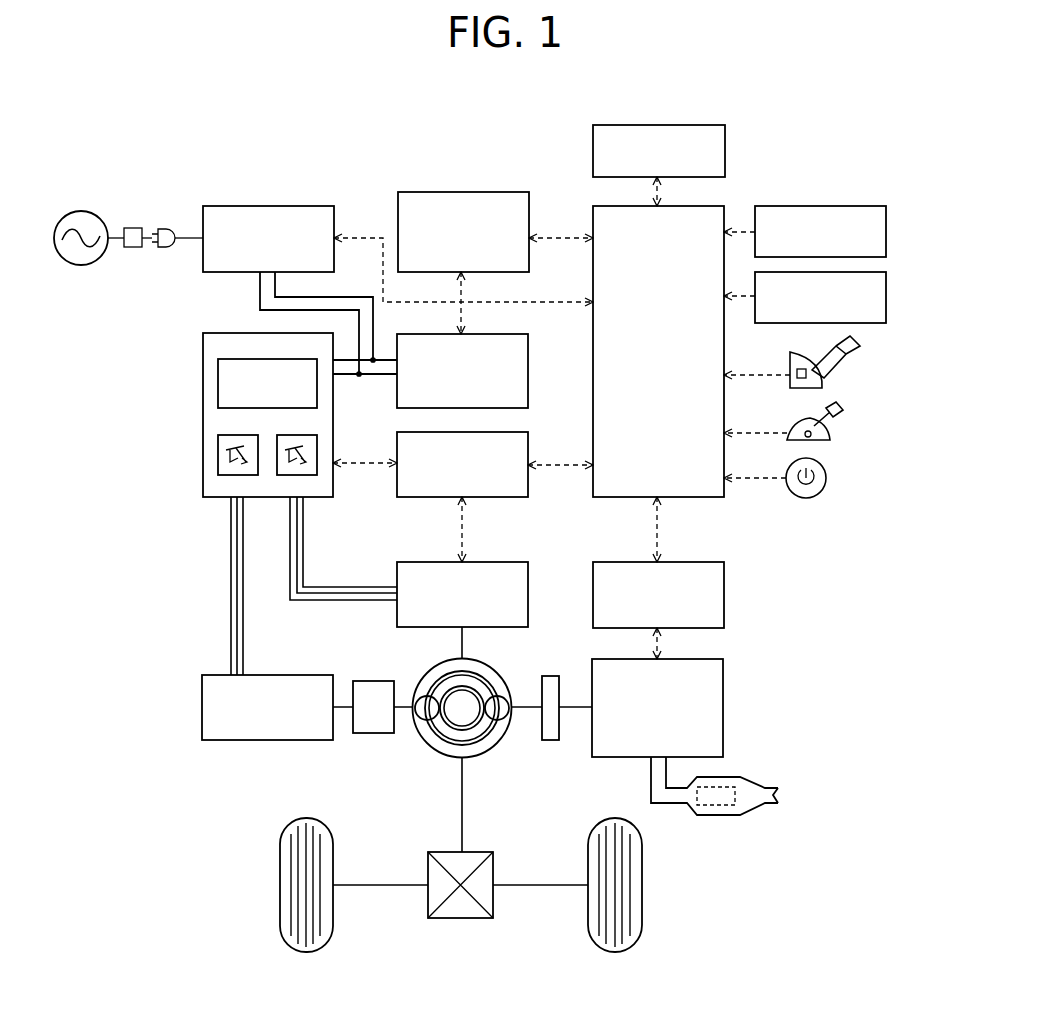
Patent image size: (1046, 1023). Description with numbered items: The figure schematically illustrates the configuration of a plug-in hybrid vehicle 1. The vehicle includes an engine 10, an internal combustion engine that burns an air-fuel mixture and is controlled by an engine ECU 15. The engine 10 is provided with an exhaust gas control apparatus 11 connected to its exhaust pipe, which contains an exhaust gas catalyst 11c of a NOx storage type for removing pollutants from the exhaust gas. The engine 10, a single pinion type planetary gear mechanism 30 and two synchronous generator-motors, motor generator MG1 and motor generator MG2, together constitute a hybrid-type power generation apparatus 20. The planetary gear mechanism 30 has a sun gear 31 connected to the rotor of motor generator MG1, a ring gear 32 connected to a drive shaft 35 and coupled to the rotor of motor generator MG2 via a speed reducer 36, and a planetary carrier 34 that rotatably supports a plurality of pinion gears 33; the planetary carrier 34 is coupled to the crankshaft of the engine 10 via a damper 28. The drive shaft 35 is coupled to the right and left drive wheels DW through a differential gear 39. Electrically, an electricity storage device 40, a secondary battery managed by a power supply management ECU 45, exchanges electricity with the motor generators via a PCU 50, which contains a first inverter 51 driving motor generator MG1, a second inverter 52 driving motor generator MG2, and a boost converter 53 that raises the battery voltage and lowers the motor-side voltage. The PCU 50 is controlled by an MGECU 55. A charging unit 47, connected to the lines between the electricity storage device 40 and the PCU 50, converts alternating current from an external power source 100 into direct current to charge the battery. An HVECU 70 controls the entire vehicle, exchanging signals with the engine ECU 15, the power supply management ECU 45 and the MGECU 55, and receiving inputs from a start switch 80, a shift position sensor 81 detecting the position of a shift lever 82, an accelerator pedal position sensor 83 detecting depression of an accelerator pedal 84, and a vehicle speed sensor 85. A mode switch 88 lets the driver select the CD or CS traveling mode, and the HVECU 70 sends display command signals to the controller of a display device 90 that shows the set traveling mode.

The hybrid vehicle 1 is at (868, 661).
The engine 10 is at (723, 704).
The exhaust gas control apparatus 11 is at (748, 815).
The exhaust gas catalyst 11c is at (722, 788).
The engine ECU 15 is at (724, 593).
The power generation apparatus 20 is at (418, 717).
The damper 28 is at (560, 742).
The planetary gear mechanism 30 is at (418, 745).
The sun gear 31 is at (440, 676).
The ring gear 32 is at (480, 757).
The pinion gears 33 is at (490, 676).
The planetary carrier 34 is at (504, 740).
The drive shaft 35 is at (456, 765).
The speed reducer 36 is at (362, 733).
The differential gear 39 is at (478, 918).
The electricity storage device 40 is at (528, 398).
The power supply management ECU 45 is at (460, 192).
The charging unit 47 is at (266, 206).
The PCU 50 is at (266, 414).
The first inverter 51 is at (317, 455).
The second inverter 52 is at (218, 462).
The boost converter 53 is at (218, 380).
The MGECU 55 is at (528, 497).
The HVECU 70 is at (593, 218).
The start switch 80 is at (826, 486).
The shift position sensor 81 is at (830, 432).
The shift lever 82 is at (838, 408).
The accelerator pedal position sensor 83 is at (825, 378).
The accelerator pedal 84 is at (855, 345).
The vehicle speed sensor 85 is at (886, 292).
The mode switch 88 is at (886, 228).
The display device 90 is at (725, 150).
The external power source 100 is at (80, 211).
The motor generator MG1 is at (397, 568).
The motor generator MG2 is at (202, 690).
The drive wheels DW is at (280, 884).